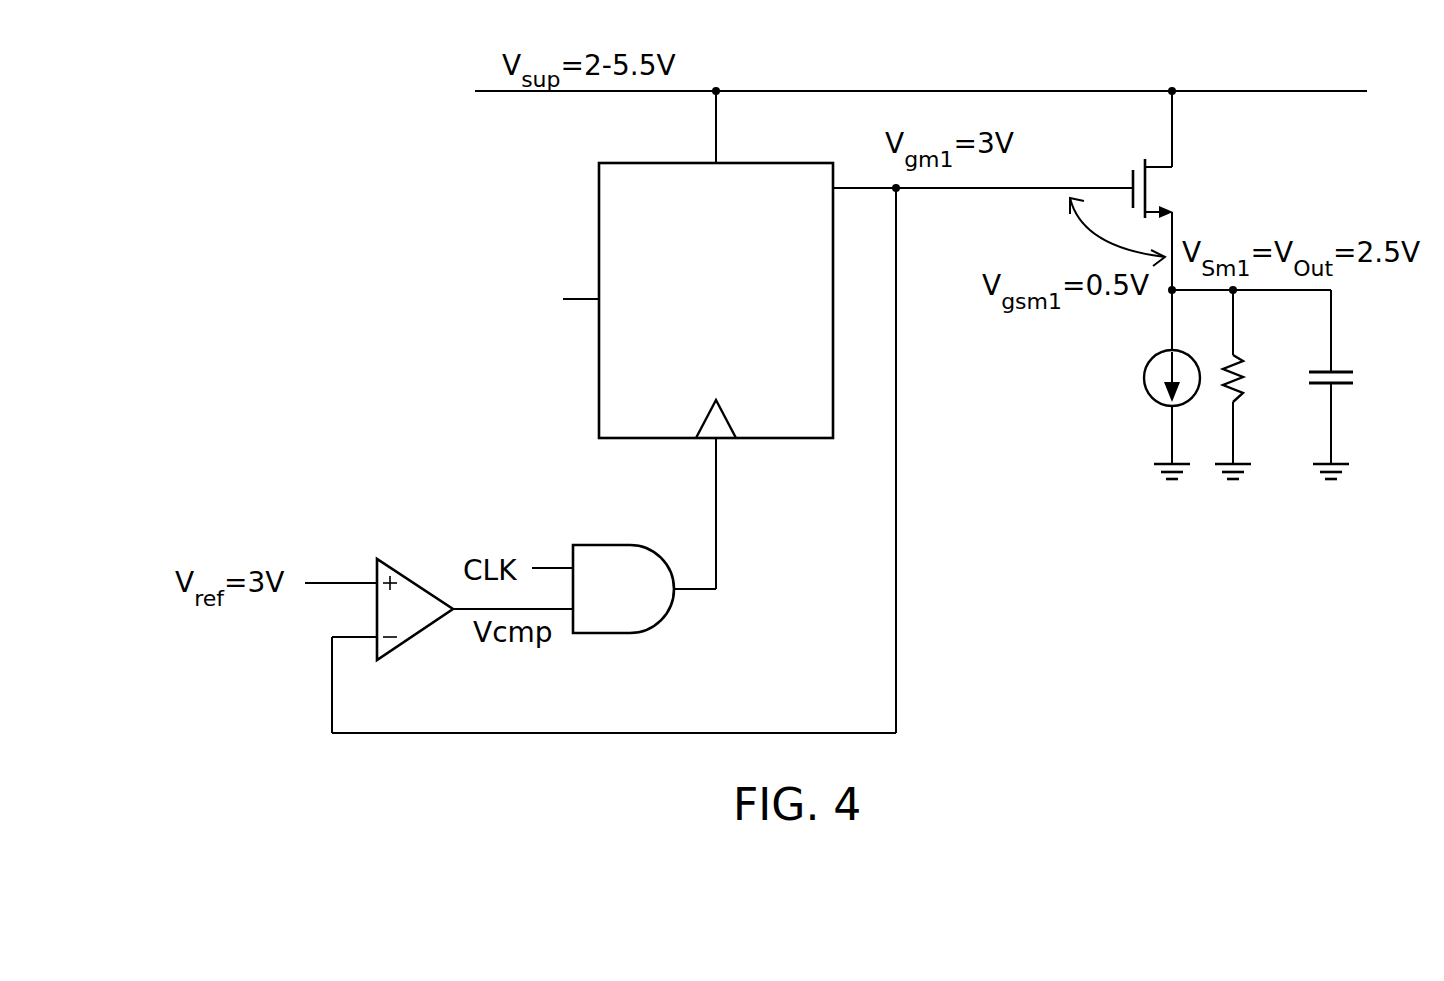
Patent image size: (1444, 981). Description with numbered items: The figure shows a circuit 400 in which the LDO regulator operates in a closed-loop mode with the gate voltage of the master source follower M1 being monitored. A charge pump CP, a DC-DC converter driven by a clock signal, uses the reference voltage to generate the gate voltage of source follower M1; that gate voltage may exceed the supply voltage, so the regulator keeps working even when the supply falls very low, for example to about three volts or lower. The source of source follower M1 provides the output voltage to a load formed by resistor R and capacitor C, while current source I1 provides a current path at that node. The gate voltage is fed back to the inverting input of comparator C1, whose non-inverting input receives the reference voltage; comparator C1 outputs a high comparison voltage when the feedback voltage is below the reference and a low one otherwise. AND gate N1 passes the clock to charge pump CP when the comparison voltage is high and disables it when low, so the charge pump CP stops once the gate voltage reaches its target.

The circuit 400 is at (1088, 675).
The charge pump CP is at (698, 300).
The master source follower M1 is at (1166, 188).
The comparator C1 is at (417, 638).
The AND gate N1 is at (605, 634).
The current source I1 is at (1144, 381).
The resistor R is at (1245, 378).
The capacitor C is at (1353, 378).